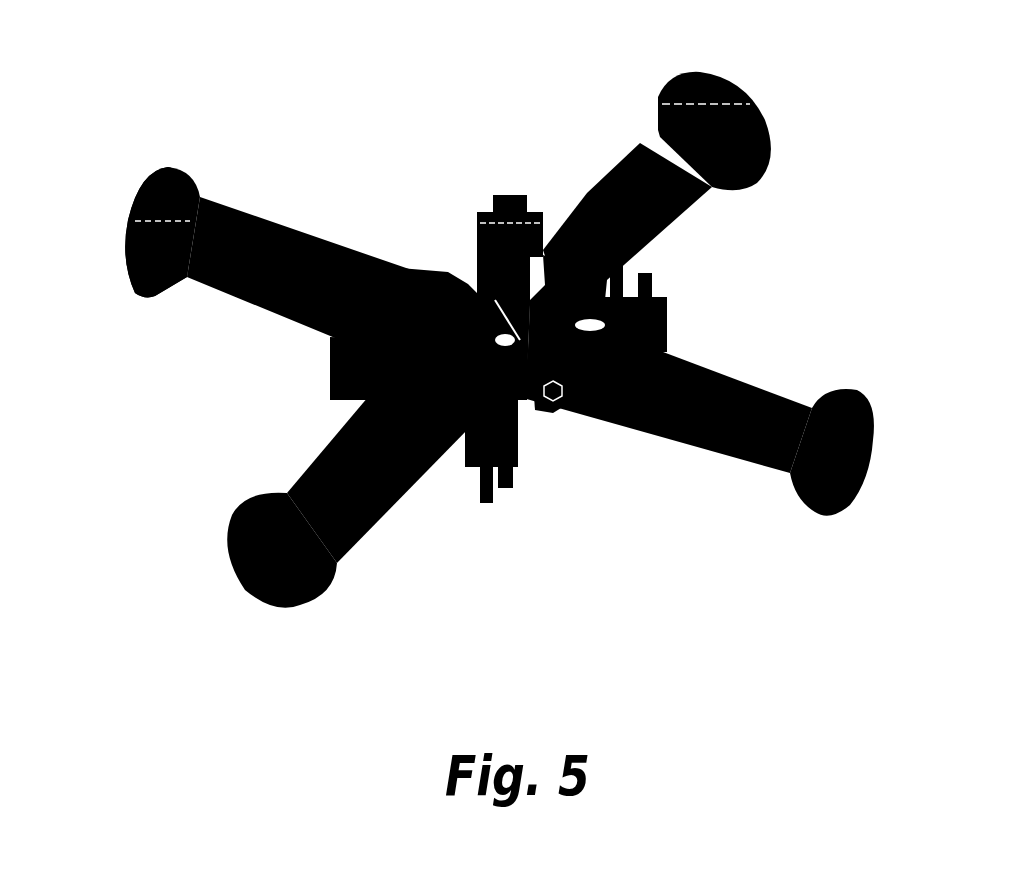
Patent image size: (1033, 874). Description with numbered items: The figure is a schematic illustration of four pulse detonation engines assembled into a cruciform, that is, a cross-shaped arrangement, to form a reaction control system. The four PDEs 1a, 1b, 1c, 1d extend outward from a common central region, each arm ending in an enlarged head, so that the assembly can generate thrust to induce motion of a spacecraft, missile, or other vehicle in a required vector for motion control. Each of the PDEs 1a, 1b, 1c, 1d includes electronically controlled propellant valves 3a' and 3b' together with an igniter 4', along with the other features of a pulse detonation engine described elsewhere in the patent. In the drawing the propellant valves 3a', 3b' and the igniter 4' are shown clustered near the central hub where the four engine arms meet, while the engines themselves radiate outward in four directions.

The PDE 1a is at (777, 387).
The PDE 1b is at (620, 170).
The PDE 1c is at (203, 285).
The PDE 1d is at (387, 510).
The electronically controlled propellant valve 3a' is at (536, 541).
The electronically controlled propellant valve 3b' is at (602, 515).
The igniter 4' is at (562, 420).